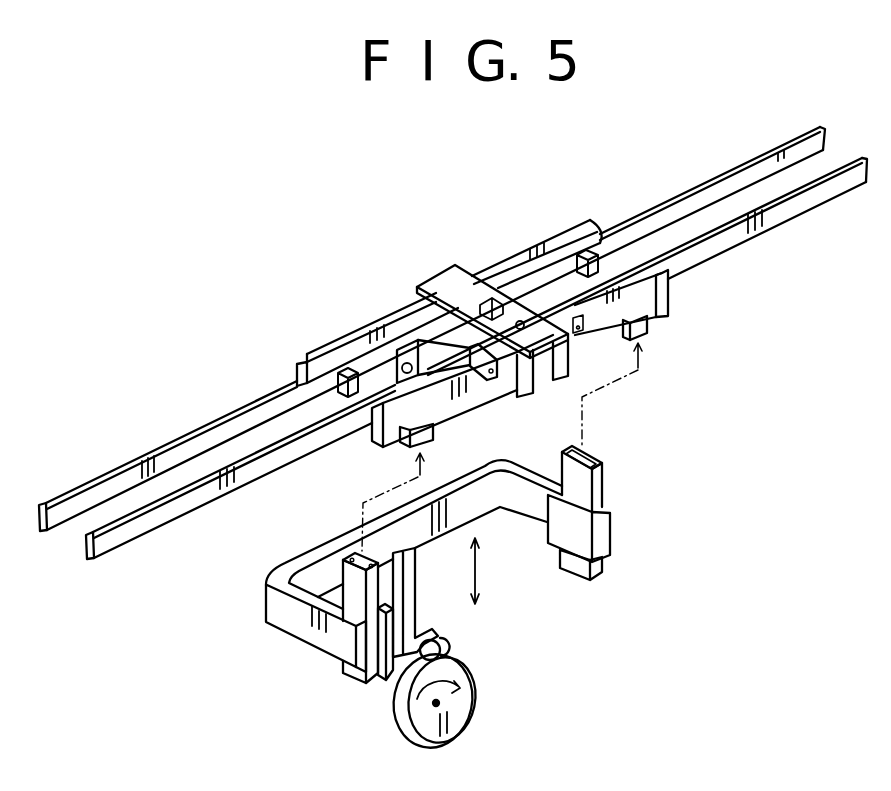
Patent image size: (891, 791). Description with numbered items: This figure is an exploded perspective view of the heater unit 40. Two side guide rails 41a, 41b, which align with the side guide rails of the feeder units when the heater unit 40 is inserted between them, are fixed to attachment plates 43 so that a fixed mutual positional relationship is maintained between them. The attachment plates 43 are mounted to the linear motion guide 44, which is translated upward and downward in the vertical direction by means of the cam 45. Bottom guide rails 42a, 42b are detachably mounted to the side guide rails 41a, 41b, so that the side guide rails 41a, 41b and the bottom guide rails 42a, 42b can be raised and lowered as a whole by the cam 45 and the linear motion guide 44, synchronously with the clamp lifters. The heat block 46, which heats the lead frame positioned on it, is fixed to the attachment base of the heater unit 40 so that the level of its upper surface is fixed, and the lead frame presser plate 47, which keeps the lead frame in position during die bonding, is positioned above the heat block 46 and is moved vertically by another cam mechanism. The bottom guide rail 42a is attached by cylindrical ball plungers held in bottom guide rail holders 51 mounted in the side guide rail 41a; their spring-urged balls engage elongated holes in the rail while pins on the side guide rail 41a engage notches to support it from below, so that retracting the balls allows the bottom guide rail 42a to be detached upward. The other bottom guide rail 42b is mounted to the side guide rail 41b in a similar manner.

The heater unit 40 is at (577, 210).
The side guide rail 41a is at (353, 338).
The side guide rail 41b is at (668, 297).
The bottom guide rail 42a is at (177, 440).
The bottom guide rail 42b is at (185, 508).
The attachment plate 43 is at (410, 450).
The linear motion guide 44 is at (602, 485).
The cam 45 is at (465, 670).
The heat block 46 is at (423, 340).
The lead frame presser plate 47 is at (465, 282).
The bottom guide rail holder 51 is at (332, 352).